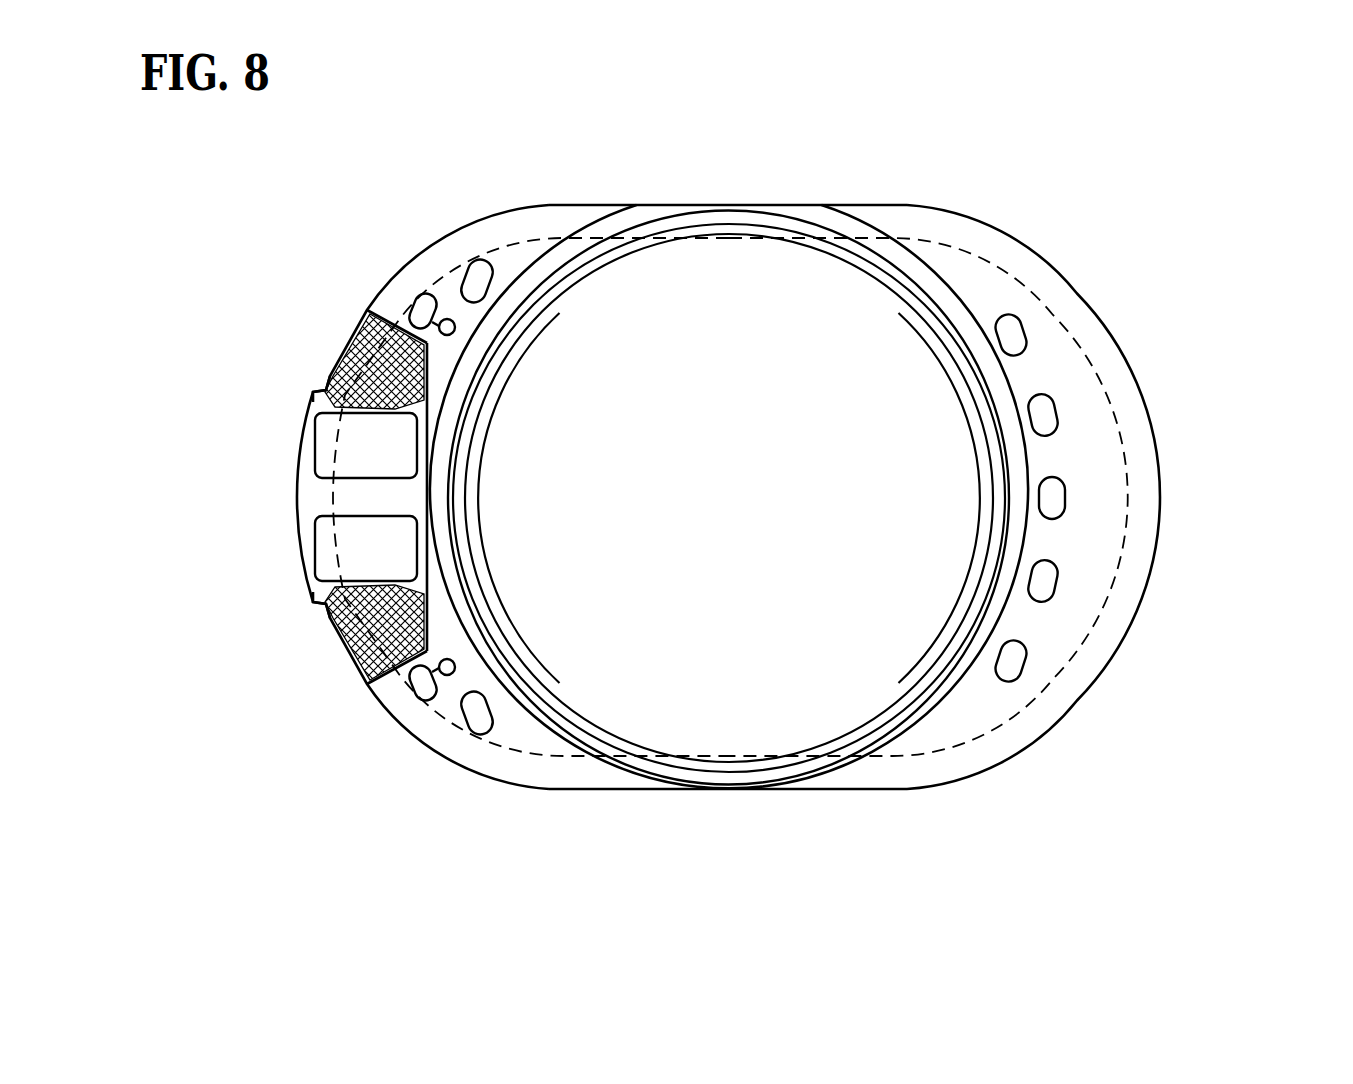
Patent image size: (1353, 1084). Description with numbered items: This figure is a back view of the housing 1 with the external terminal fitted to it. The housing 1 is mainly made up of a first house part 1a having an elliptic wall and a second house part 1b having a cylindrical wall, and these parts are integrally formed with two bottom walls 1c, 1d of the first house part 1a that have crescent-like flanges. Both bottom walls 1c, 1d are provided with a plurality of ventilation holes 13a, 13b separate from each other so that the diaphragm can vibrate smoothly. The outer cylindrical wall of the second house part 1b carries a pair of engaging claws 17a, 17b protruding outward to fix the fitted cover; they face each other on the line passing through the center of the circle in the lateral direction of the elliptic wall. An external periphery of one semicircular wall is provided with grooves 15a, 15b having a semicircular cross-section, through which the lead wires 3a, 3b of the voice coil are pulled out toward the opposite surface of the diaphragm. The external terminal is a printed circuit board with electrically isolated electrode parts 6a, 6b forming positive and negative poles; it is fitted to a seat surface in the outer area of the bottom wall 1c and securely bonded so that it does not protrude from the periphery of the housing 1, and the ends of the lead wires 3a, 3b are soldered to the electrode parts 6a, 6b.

The housing 1 is at (753, 523).
The first house part 1a is at (1037, 748).
The second house part 1b is at (875, 245).
The bottom wall 1c is at (438, 734).
The bottom wall 1d is at (1101, 575).
The lead wire 3a is at (350, 660).
The lead wire 3b is at (345, 342).
The electrode part 6a is at (355, 552).
The electrode part 6b is at (353, 447).
The ventilation holes 13a is at (412, 323).
The ventilation holes 13b is at (1056, 505).
The groove 15a is at (326, 604).
The groove 15b is at (326, 390).
The engaging claw 17a is at (728, 790).
The engaging claw 17b is at (729, 206).